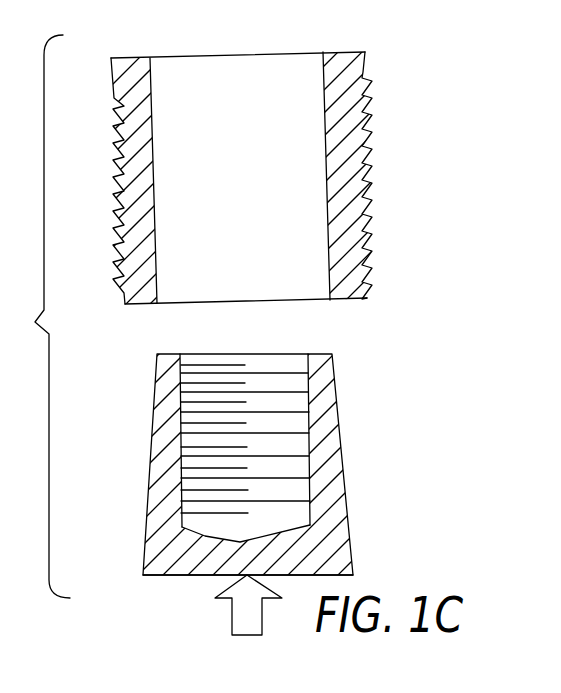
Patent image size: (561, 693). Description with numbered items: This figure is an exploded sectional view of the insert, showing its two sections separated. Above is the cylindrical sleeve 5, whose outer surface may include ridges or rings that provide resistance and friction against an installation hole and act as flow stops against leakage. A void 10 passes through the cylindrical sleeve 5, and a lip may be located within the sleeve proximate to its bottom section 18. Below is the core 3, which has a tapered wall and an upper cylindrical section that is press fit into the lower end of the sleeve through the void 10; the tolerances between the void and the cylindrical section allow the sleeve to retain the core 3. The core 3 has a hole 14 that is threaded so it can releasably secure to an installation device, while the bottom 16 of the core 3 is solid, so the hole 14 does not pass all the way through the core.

The cylindrical sleeve 5 is at (141, 49).
The void 10 is at (293, 78).
The bottom section 18 is at (141, 306).
The core 3 is at (354, 457).
The hole 14 is at (299, 364).
The bottom 16 is at (175, 578).